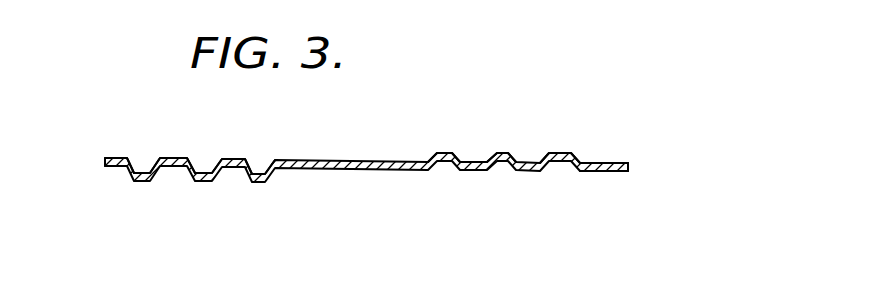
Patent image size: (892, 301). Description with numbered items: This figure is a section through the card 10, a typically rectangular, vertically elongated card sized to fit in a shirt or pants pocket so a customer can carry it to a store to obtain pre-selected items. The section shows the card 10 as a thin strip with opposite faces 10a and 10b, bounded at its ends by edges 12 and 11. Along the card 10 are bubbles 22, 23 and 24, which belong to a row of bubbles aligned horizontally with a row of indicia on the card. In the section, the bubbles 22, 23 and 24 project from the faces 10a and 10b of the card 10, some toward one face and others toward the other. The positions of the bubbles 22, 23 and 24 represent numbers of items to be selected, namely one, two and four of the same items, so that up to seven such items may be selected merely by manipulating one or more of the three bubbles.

The card 10 is at (597, 124).
The face 10a is at (617, 160).
The face 10b is at (593, 172).
The edge 11 is at (629, 169).
The edge 12 is at (105, 164).
The bubble 22 is at (265, 182).
The bubble 23 is at (200, 182).
The bubble 24 is at (142, 181).